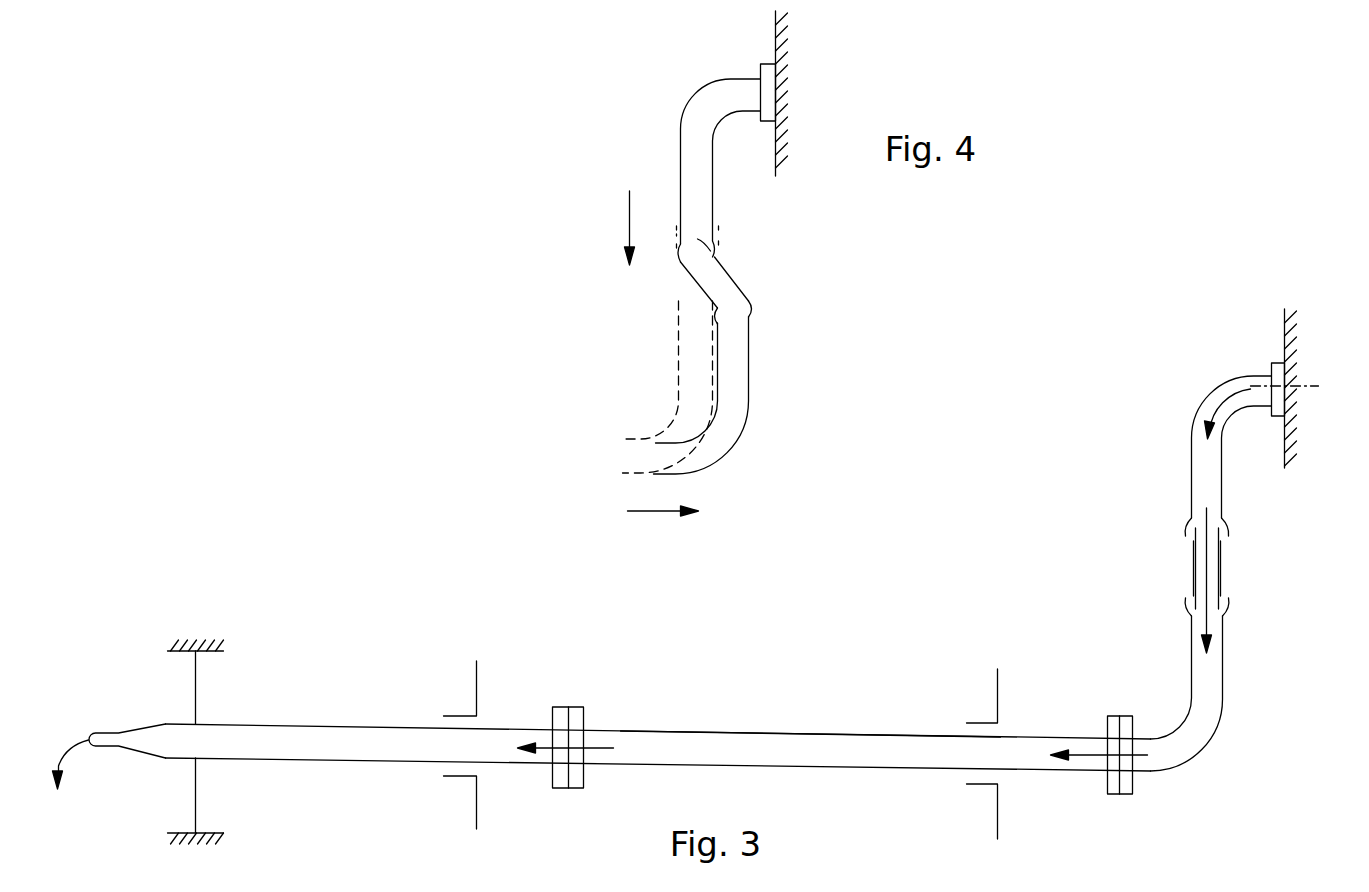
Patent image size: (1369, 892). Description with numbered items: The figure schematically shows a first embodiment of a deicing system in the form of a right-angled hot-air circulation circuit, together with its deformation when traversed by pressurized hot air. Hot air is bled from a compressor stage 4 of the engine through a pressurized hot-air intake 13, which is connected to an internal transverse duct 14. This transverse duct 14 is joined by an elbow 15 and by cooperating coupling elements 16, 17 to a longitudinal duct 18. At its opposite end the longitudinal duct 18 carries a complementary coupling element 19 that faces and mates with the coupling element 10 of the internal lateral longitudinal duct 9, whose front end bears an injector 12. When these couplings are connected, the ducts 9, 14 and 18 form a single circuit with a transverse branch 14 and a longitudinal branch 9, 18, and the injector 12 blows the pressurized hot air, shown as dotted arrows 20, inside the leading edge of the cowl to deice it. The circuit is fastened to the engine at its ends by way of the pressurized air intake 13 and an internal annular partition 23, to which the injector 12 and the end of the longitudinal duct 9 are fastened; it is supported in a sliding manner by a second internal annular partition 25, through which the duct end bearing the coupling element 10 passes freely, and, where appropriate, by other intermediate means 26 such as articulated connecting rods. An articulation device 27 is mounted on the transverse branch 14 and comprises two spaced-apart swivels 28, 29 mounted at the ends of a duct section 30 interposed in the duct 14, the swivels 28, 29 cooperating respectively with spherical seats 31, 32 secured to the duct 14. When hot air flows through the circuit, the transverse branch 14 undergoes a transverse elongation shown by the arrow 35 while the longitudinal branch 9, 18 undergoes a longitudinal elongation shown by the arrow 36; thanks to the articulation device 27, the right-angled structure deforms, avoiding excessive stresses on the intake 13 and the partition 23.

In FIG. 4, the compressor stage 4 is at (817, 93).
In FIG. 3, the compressor stage 4 is at (1320, 388).
In FIG. 3, the internal lateral longitudinal duct 9 is at (325, 740).
In FIG. 3, the coupling element 10 is at (562, 706).
In FIG. 3, the injector 12 is at (108, 737).
In FIG. 4, the pressurized hot-air intake 13 is at (765, 68).
In FIG. 3, the pressurized hot-air intake 13 is at (1279, 372).
In FIG. 4, the internal transverse duct 14 is at (693, 160).
In FIG. 3, the internal transverse duct 14 is at (1200, 475).
In FIG. 4, the elbow 15 is at (722, 438).
In FIG. 3, the elbow 15 is at (1193, 740).
In FIG. 3, the coupling element 16 is at (1127, 715).
In FIG. 3, the coupling element 17 is at (1112, 715).
In FIG. 3, the longitudinal duct 18 is at (822, 748).
In FIG. 3, the complementary coupling element 19 is at (575, 706).
In FIG. 3, the pressurized hot air 20 is at (60, 757).
In FIG. 3, the internal annular partition 23 is at (197, 680).
In FIG. 3, the internal annular partition 25 is at (476, 677).
In FIG. 3, the intermediate means 26 is at (995, 700).
In FIG. 4, the articulation device 27 is at (738, 278).
In FIG. 3, the articulation device 27 is at (1235, 568).
In FIG. 3, the swivel 28 is at (1190, 530).
In FIG. 3, the swivel 29 is at (1230, 605).
In FIG. 3, the duct section 30 is at (1195, 570).
In FIG. 3, the spherical seat 31 is at (1230, 527).
In FIG. 3, the spherical seat 32 is at (1185, 605).
In FIG. 4, the arrow 35 is at (629, 222).
In FIG. 4, the arrow 36 is at (652, 510).